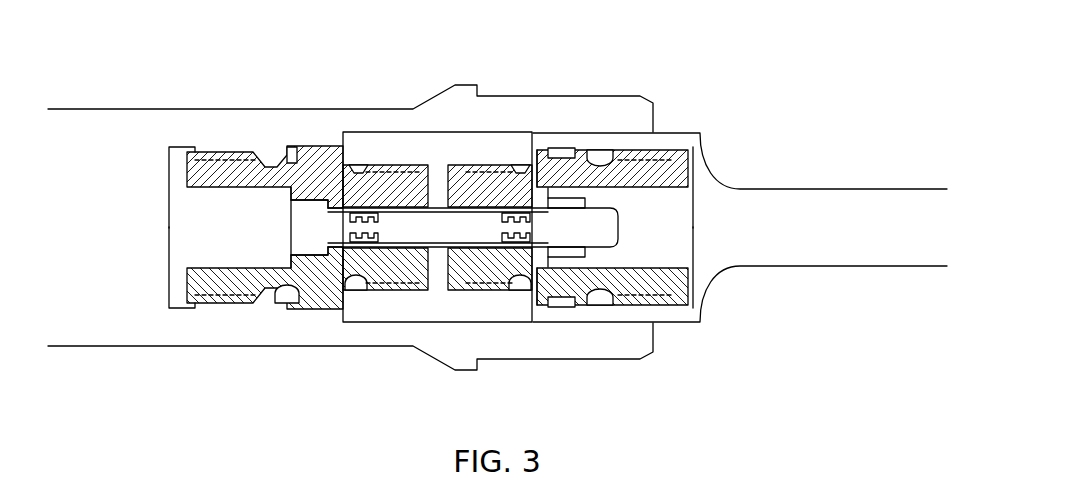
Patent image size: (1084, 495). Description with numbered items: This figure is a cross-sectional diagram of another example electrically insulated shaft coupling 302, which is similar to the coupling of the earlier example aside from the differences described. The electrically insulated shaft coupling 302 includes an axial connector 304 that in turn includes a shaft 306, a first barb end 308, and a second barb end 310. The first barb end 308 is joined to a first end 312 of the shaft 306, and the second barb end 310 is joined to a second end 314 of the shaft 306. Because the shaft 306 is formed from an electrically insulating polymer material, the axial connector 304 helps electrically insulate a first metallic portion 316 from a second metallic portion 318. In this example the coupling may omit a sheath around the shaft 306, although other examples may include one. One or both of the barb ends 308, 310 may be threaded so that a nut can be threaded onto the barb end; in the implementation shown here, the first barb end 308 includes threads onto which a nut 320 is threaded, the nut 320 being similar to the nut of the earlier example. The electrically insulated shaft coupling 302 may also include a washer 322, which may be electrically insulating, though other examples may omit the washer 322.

The electrically insulated shaft coupling 302 is at (426, 66).
The axial connector 304 is at (394, 190).
The shaft 306 is at (462, 213).
The first barb end 308 is at (608, 217).
The second barb end 310 is at (298, 200).
The first end 312 is at (541, 198).
The second end 314 is at (348, 210).
The first metallic portion 316 is at (700, 318).
The second metallic portion 318 is at (222, 282).
The nut 320 is at (580, 256).
The washer 322 is at (537, 304).